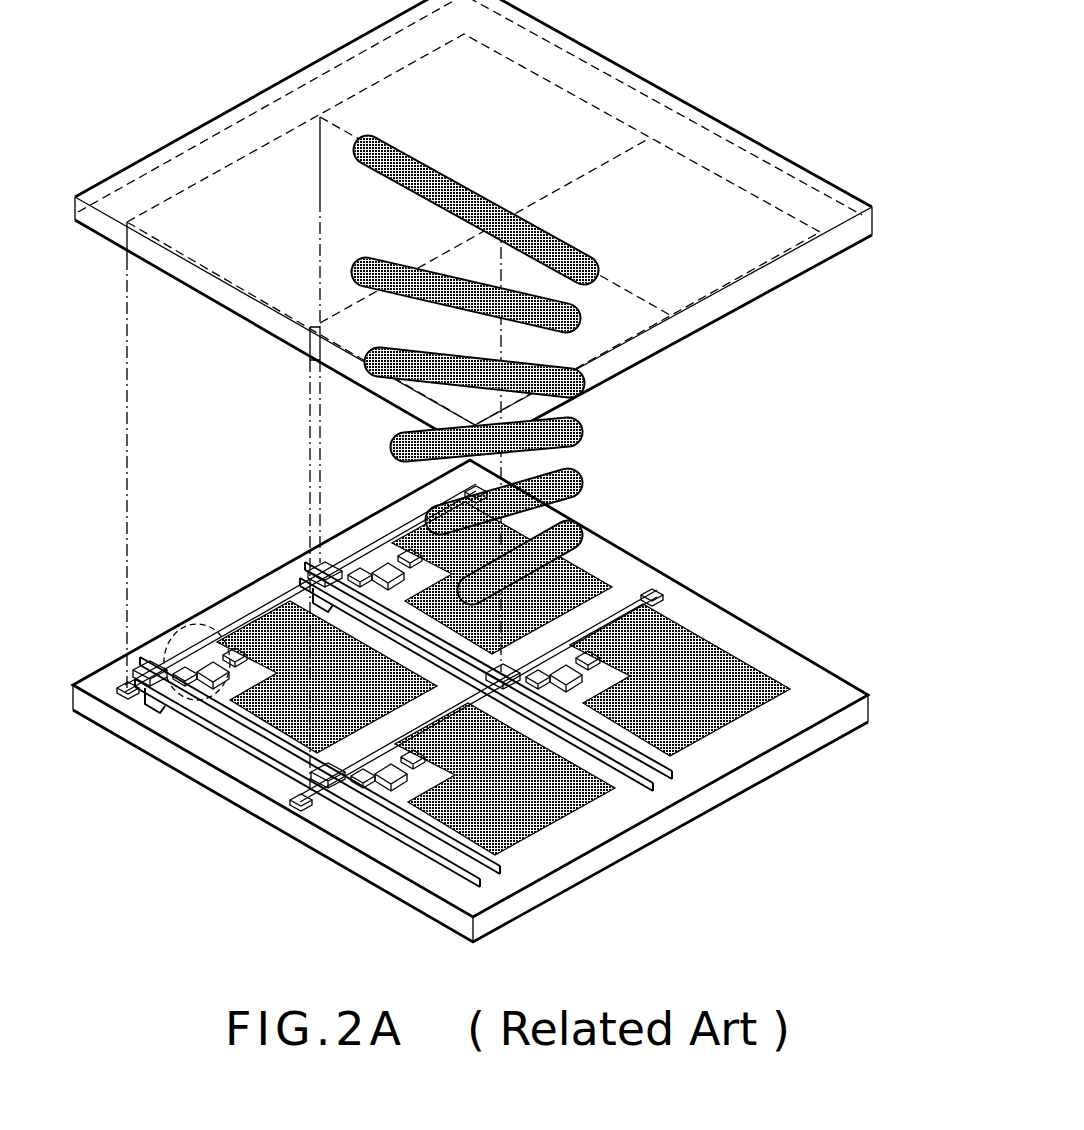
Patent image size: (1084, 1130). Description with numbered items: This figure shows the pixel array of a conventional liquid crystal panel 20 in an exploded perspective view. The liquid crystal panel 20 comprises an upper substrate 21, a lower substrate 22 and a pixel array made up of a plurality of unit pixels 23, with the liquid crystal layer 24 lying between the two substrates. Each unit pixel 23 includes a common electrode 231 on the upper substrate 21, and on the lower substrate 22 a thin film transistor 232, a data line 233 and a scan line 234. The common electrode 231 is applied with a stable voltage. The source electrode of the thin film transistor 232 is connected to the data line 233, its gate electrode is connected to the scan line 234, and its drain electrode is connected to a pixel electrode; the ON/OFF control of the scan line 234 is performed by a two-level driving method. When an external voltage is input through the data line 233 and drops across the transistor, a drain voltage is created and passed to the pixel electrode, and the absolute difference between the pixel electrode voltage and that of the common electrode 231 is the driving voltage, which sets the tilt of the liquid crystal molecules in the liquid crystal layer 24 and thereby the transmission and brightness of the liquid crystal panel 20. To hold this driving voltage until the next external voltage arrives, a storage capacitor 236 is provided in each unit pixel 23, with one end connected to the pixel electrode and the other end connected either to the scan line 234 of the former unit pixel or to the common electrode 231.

The liquid crystal panel 20 is at (211, 71).
The upper substrate 21 is at (875, 222).
The lower substrate 22 is at (872, 708).
The unit pixel 23 is at (161, 487).
The liquid crystal layer 24 is at (867, 275).
The common electrode 231 is at (280, 290).
The thin film transistor 232 is at (212, 633).
The data line 233 is at (672, 775).
The scan line 234 is at (440, 722).
The storage capacitor 236 is at (655, 790).